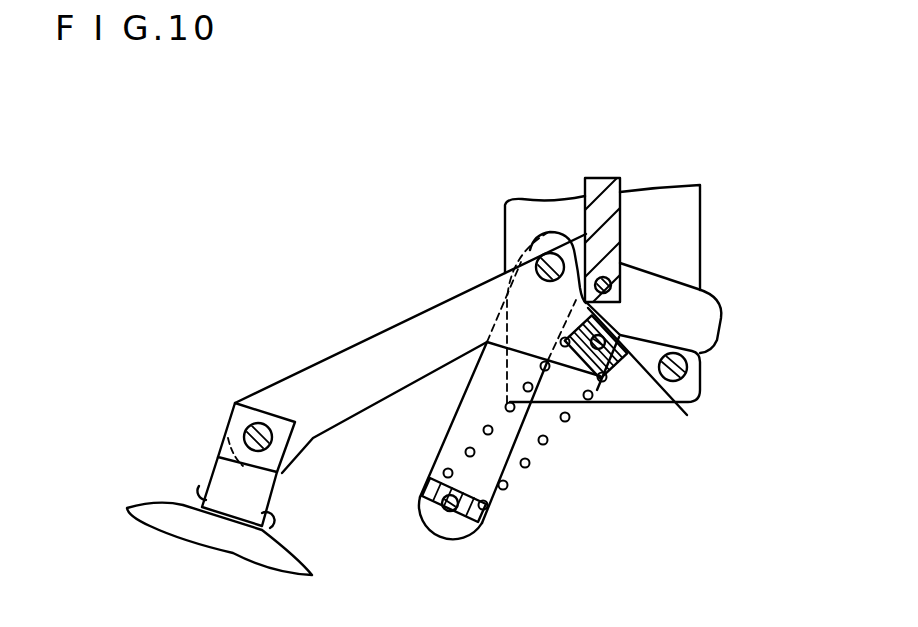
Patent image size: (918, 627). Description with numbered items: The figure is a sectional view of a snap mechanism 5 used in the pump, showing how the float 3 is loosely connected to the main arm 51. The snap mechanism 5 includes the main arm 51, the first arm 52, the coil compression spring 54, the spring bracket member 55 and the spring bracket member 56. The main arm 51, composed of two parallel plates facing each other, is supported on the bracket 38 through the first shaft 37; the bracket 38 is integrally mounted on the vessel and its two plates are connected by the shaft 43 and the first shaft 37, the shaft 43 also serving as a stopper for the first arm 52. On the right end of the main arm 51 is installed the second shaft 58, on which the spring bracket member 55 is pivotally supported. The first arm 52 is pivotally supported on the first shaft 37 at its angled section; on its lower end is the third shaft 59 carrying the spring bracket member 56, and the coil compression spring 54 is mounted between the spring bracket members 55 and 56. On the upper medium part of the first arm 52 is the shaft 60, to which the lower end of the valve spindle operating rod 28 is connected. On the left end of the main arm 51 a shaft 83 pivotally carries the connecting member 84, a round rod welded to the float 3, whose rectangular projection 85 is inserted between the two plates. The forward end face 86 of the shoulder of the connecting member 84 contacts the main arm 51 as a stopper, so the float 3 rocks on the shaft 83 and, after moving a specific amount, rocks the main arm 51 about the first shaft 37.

The valve spindle operating rod 28 is at (600, 183).
The bracket 38 is at (690, 200).
The shaft 60 is at (607, 282).
The first arm 52 is at (660, 287).
The first shaft 37 is at (527, 248).
The main arm 51 is at (400, 330).
The rectangular projection 85 is at (281, 430).
The shaft 83 is at (248, 428).
The forward end face 86 is at (220, 447).
The connecting member 84 is at (258, 493).
The float 3 is at (160, 503).
The spring bracket member 56 is at (466, 532).
The third shaft 59 is at (486, 521).
The coil compression spring 54 is at (531, 466).
The spring bracket member 55 is at (661, 377).
The snap mechanism 5 is at (630, 416).
The second shaft 58 is at (620, 335).
The shaft 43 is at (688, 368).